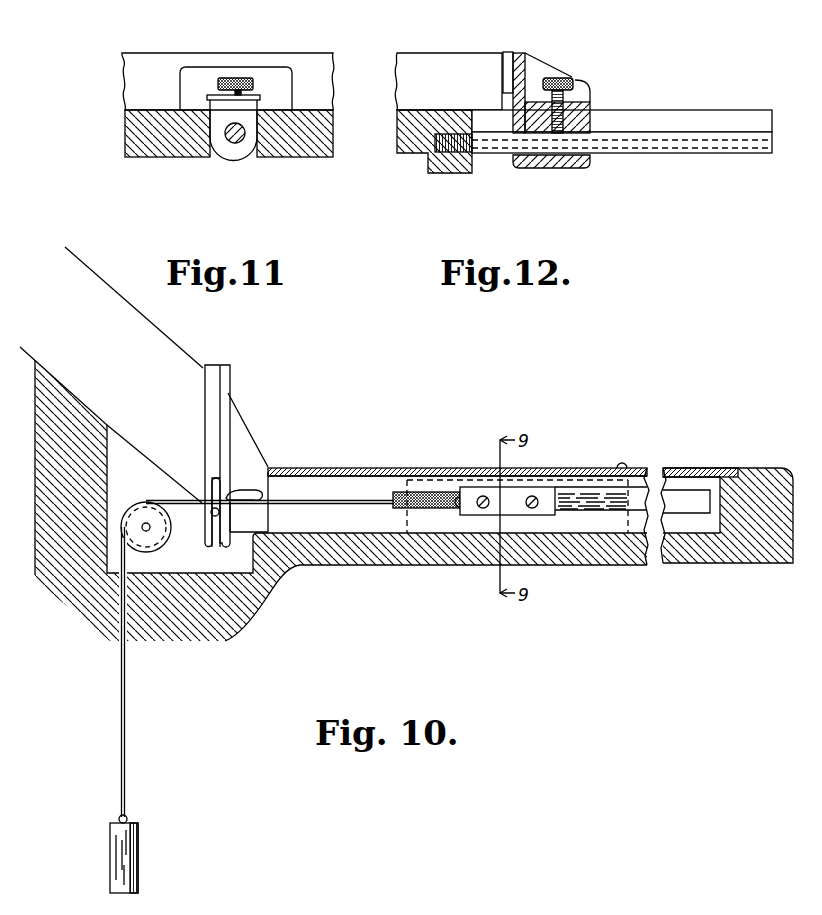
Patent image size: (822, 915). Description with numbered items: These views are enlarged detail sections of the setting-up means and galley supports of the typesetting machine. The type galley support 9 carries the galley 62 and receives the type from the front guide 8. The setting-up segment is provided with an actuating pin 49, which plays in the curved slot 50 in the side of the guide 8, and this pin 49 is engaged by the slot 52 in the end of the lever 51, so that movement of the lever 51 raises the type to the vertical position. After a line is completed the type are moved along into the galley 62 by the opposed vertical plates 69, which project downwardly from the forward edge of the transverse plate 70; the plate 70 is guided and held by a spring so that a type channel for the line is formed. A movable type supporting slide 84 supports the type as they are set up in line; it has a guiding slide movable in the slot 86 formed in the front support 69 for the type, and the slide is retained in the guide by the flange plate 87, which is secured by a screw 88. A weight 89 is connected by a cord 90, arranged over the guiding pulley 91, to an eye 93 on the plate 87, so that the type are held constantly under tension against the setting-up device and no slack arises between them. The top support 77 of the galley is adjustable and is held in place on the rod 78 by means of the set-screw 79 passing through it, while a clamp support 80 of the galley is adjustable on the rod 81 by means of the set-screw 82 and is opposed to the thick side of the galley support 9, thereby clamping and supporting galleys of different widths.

In FIG. 10, the front guide 8 is at (115, 317).
In FIG. 11, the type galley support 9 is at (172, 148).
In FIG. 12, the type galley support 9 is at (402, 157).
In FIG. 10, the type galley support 9 is at (320, 565).
In FIG. 10, the actuating pin 49 is at (222, 511).
In FIG. 10, the curved slot 50 is at (247, 492).
In FIG. 10, the lever 51 is at (220, 383).
In FIG. 10, the slot 52 is at (212, 480).
In FIG. 11, the galley 62 is at (320, 77).
In FIG. 12, the galley 62 is at (447, 67).
In FIG. 10, the vertical plates 69 is at (340, 487).
In FIG. 10, the transverse plate 70 is at (385, 470).
In FIG. 12, the top support of the galley 77 is at (527, 54).
In FIG. 12, the rod 78 is at (727, 155).
In FIG. 12, the set-screw 79 is at (568, 80).
In FIG. 11, the clamp support 80 is at (263, 68).
In FIG. 11, the rod 81 is at (230, 142).
In FIG. 11, the set-screw 82 is at (228, 78).
In FIG. 10, the movable type supporting slide 84 is at (583, 498).
In FIG. 10, the slot 86 is at (637, 498).
In FIG. 10, the flange plate 87 is at (547, 488).
In FIG. 10, the screw 88 is at (533, 507).
In FIG. 10, the weight 89 is at (125, 849).
In FIG. 10, the cord 90 is at (121, 671).
In FIG. 10, the guiding pulley 91 is at (163, 545).
In FIG. 10, the eye 93 is at (462, 508).